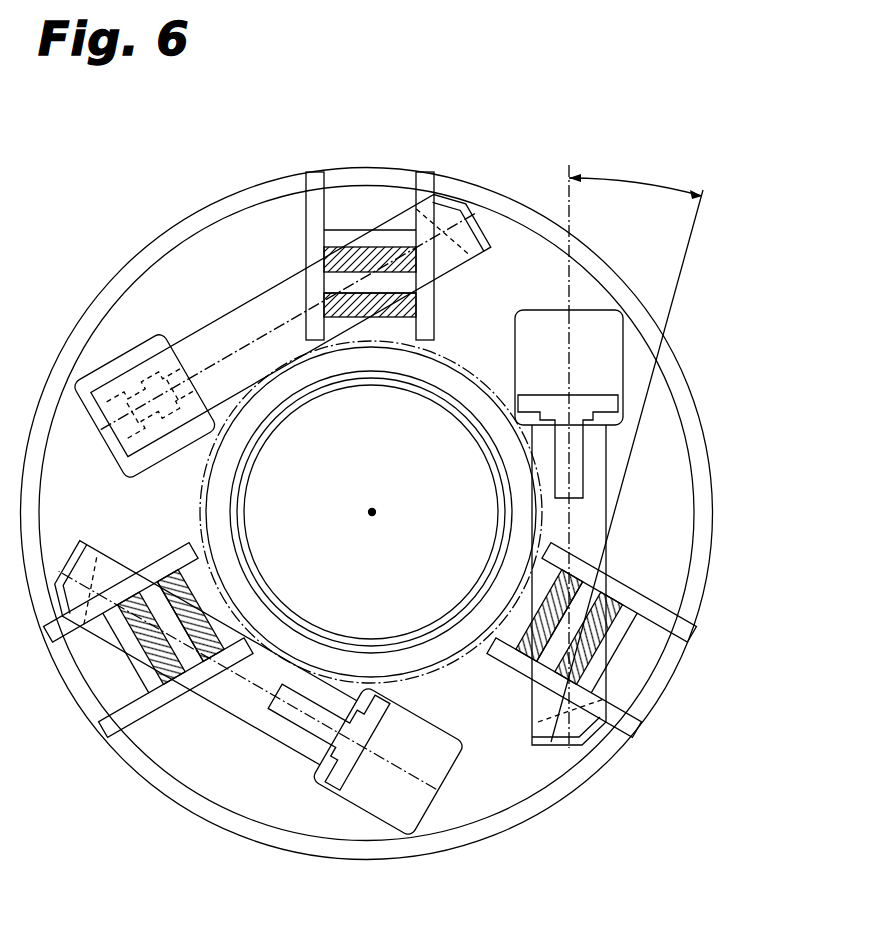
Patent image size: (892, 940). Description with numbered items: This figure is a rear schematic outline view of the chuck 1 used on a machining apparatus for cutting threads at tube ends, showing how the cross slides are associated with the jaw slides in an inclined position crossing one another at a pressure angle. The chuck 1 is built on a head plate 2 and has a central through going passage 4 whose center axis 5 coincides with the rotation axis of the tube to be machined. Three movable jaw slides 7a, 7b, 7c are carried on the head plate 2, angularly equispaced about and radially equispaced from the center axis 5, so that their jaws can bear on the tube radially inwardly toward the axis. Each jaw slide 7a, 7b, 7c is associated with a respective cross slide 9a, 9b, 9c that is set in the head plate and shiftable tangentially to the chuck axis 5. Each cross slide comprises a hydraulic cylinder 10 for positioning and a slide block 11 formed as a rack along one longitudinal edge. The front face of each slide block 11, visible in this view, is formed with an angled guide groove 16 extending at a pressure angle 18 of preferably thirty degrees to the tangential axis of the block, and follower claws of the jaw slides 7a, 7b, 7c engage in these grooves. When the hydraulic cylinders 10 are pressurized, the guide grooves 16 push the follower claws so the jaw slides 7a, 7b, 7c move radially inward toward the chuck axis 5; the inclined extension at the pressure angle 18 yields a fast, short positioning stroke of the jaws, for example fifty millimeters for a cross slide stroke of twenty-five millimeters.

The chuck 1 is at (376, 136).
The head plate 2 is at (488, 783).
The central through going passage 4 is at (275, 512).
The center axis 5 is at (374, 510).
The jaw slide 7a is at (306, 222).
The jaw slide 7b is at (652, 602).
The jaw slide 7c is at (158, 716).
The cross slide 9a is at (124, 352).
The cross slide 9b is at (616, 506).
The cross slide 9c is at (354, 808).
The hydraulic cylinder 10 is at (123, 412).
The slide block 11 is at (456, 232).
The guide groove 16 is at (381, 282).
The pressure angle 18 is at (630, 178).